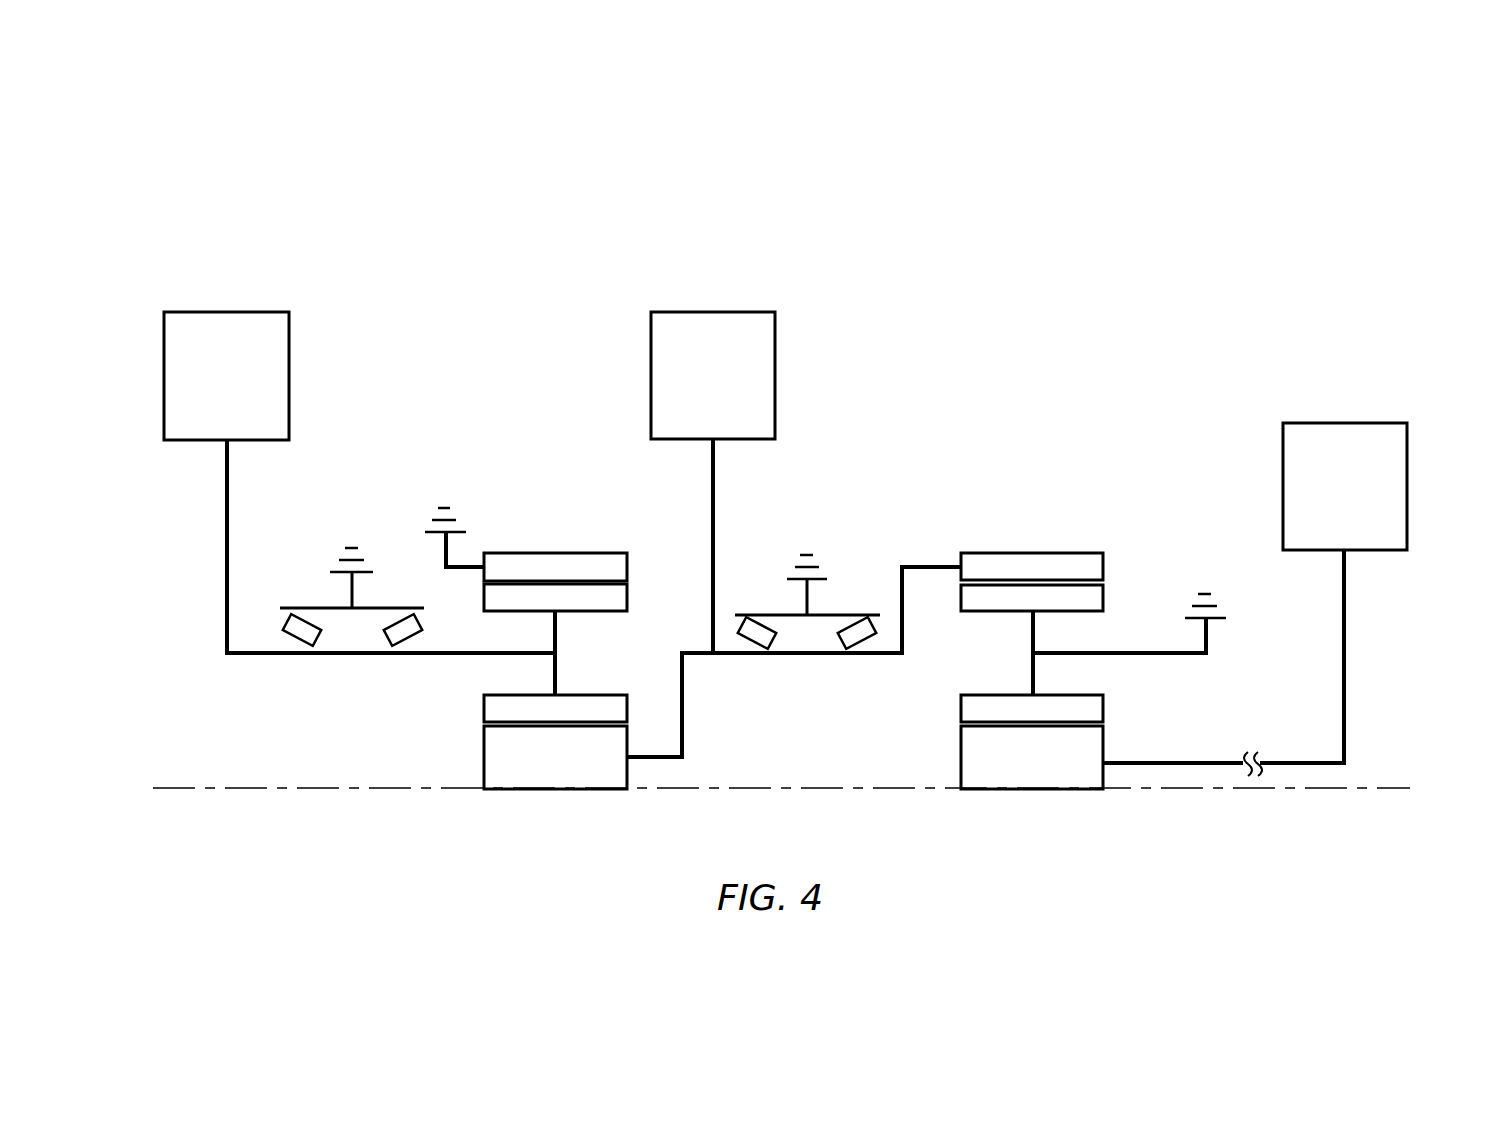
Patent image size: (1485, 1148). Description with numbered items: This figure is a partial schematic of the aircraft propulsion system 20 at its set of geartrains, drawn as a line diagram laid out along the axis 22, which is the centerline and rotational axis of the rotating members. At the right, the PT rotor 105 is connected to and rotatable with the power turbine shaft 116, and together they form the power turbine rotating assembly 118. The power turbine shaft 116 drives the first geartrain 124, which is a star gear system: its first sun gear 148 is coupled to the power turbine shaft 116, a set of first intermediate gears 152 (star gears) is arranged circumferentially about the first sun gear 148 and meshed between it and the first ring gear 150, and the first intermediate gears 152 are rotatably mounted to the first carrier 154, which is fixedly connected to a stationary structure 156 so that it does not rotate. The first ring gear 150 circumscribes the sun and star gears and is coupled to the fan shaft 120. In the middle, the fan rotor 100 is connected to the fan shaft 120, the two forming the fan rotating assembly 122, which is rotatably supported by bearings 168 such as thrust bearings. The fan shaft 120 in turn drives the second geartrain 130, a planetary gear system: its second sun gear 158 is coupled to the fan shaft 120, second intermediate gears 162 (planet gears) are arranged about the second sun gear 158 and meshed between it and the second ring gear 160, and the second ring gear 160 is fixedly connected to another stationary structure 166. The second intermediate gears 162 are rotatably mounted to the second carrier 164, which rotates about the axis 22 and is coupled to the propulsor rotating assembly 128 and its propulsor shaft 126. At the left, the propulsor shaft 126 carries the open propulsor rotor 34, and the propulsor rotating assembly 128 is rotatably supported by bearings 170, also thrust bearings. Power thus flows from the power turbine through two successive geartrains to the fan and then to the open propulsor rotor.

The aircraft propulsion system 20 is at (212, 135).
The axis 22 is at (190, 790).
The open propulsor rotor 34 is at (204, 391).
The fan rotor 100 is at (688, 389).
The PT rotor 105 is at (1322, 500).
The power turbine shaft 116 is at (1300, 762).
The power turbine rotating assembly 118 is at (1375, 738).
The fan shaft 120 is at (805, 655).
The fan rotating assembly 122 is at (761, 692).
The first geartrain 124 is at (1039, 618).
The propulsor shaft 126 is at (265, 655).
The propulsor rotating assembly 128 is at (190, 656).
The second geartrain 130 is at (540, 611).
The first sun gear 148 is at (961, 757).
The first ring gear 150 is at (1104, 564).
The first intermediate gears 152 is at (1104, 597).
The first carrier 154 is at (1128, 655).
The stationary structure 156 is at (1217, 616).
The second sun gear 158 is at (484, 757).
The second ring gear 160 is at (628, 565).
The second intermediate gears 162 is at (628, 596).
The second carrier 164 is at (462, 652).
The stationary structure 166 is at (437, 530).
The bearings 168 is at (764, 625).
The bearings 170 is at (302, 622).